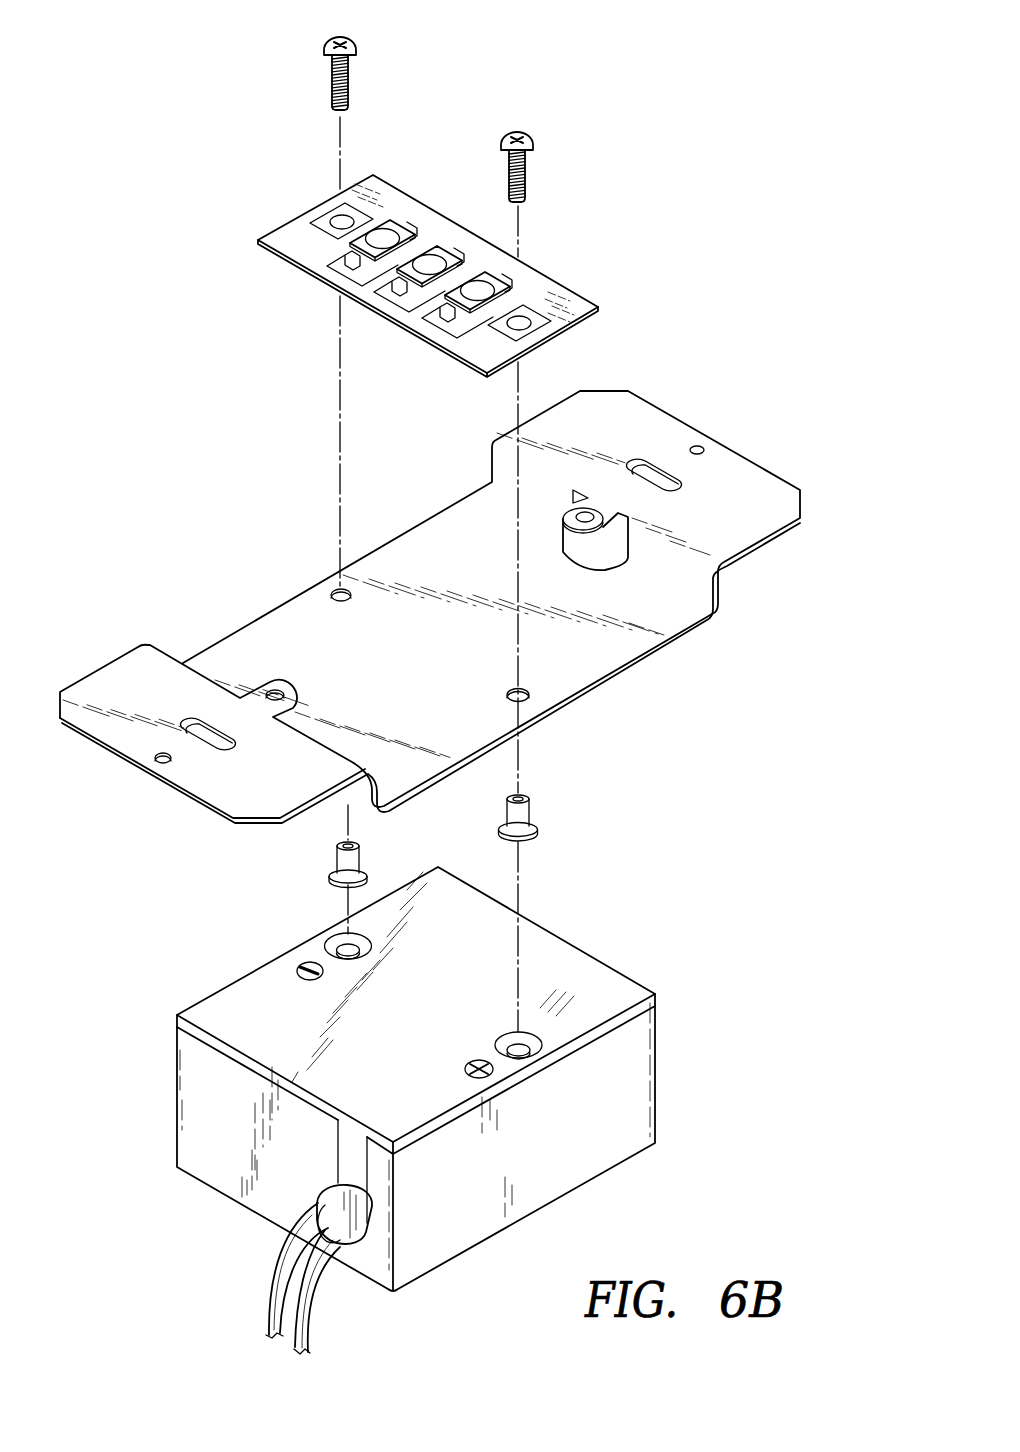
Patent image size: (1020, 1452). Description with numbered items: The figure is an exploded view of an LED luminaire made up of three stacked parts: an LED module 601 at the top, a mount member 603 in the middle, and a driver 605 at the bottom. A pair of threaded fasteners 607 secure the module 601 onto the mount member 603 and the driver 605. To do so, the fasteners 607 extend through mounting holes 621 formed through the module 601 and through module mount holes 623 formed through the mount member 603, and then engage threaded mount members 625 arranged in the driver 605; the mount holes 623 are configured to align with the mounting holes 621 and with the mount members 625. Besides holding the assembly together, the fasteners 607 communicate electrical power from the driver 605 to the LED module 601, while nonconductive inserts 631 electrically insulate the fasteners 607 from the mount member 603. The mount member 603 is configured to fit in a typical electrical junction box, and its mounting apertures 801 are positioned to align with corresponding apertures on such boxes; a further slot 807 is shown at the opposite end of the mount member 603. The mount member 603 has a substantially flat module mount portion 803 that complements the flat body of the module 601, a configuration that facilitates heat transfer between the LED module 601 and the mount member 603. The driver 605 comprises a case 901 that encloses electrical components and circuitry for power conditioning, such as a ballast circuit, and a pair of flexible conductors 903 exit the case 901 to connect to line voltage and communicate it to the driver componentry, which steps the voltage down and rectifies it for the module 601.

The threaded fasteners 607 is at (327, 43).
The mounting holes 621 is at (340, 218).
The LED module 601 is at (442, 266).
The mounting apertures 801 is at (652, 472).
The mount member 603 is at (444, 596).
The module mount holes 623 is at (339, 589).
The slot in bracket flange 807 is at (203, 732).
The module mount portion 803 is at (580, 647).
The nonconductive inserts 631 is at (343, 860).
The threaded mount members 625 is at (335, 942).
The driver 605 is at (470, 1074).
The case 901 is at (622, 1072).
The flexible conductors 903 is at (297, 1280).